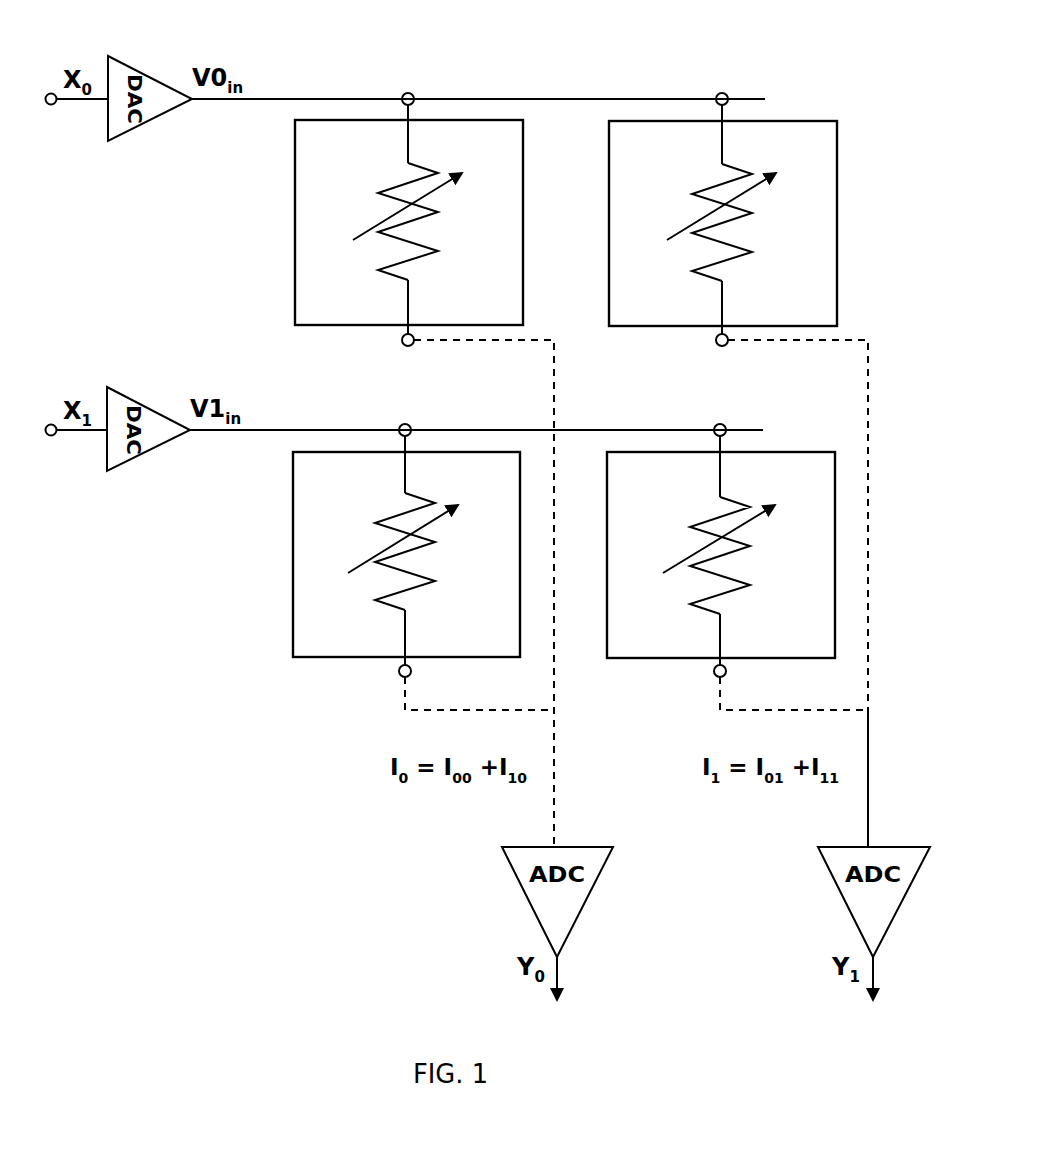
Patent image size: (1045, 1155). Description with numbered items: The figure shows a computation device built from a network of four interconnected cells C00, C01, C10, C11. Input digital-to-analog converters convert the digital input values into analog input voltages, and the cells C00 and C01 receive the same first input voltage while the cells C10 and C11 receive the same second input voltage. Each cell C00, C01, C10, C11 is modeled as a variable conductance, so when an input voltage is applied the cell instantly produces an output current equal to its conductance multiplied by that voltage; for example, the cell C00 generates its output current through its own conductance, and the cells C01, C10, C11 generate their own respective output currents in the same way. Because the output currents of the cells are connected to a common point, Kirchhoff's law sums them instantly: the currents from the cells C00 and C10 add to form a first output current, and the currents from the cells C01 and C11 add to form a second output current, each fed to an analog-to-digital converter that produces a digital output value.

The cell C00 is at (295, 241).
The cell C01 is at (609, 259).
The cell C10 is at (293, 607).
The cell C11 is at (665, 659).